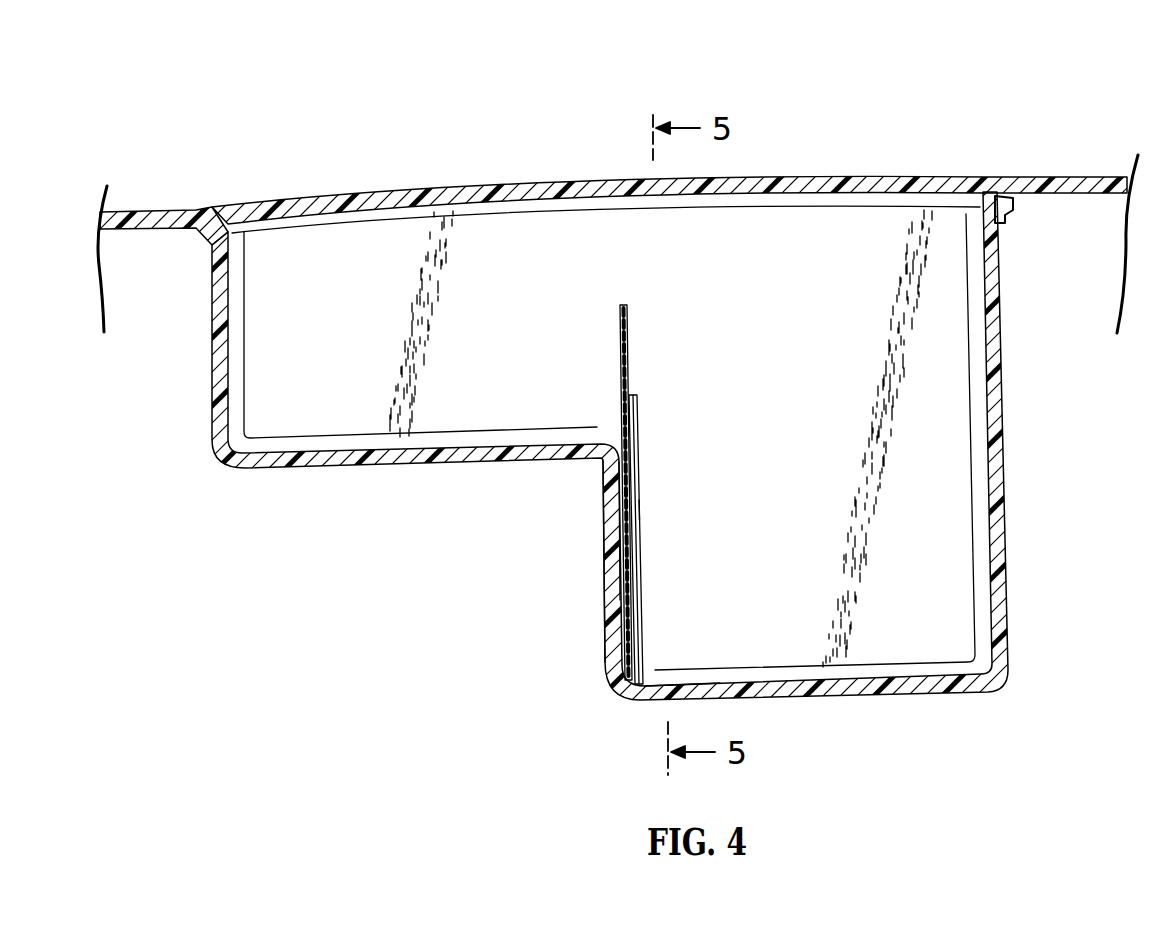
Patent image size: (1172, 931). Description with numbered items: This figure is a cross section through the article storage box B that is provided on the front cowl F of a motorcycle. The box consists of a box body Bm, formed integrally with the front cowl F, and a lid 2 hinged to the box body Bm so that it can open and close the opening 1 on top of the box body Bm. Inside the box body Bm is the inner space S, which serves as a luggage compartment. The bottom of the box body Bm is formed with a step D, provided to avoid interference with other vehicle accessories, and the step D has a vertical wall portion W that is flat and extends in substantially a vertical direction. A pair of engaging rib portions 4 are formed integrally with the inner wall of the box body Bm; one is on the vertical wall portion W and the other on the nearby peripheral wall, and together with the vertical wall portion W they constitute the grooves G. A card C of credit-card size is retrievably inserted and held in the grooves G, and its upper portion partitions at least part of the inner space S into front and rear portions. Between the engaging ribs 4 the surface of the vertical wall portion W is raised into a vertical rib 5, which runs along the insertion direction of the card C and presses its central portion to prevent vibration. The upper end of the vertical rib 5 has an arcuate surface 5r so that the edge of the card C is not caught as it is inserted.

The front cowl F is at (152, 218).
The opening 1 is at (335, 240).
The lid 2 is at (897, 182).
The article storage box B is at (1028, 126).
The box body Bm is at (997, 310).
The card C is at (624, 344).
The inner space S is at (754, 349).
The step D is at (615, 442).
The engaging rib portion 4 is at (637, 410).
The arcuate surface 5r is at (639, 508).
The vertical rib 5 is at (630, 575).
The vertical wall portion W is at (618, 607).
The groove G is at (630, 662).